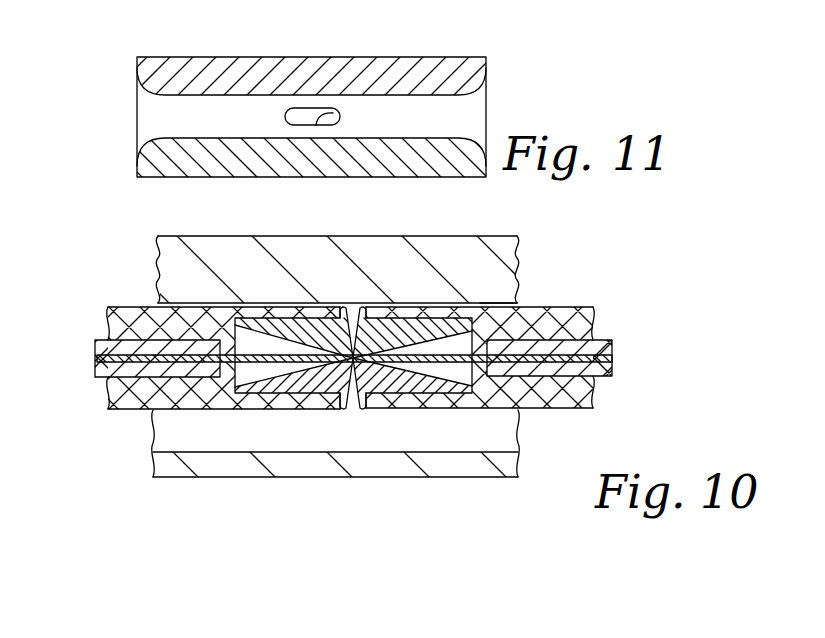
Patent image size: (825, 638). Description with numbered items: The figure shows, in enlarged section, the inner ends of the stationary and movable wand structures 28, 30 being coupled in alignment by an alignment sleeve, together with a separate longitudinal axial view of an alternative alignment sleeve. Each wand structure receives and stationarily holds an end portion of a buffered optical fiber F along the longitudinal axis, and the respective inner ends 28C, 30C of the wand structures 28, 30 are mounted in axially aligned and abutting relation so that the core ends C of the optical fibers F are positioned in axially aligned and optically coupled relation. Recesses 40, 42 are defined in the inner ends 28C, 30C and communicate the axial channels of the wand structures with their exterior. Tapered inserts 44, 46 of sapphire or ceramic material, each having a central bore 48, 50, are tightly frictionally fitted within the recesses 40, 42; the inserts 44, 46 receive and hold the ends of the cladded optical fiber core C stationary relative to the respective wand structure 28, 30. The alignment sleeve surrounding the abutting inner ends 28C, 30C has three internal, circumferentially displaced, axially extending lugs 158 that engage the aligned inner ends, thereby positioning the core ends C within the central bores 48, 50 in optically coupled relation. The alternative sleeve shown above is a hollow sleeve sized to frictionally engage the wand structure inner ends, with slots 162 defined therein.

In FIG. 10, the lugs 158 is at (507, 287).
In FIG. 11, the slots 162 is at (345, 116).
In FIG. 11, the recess 40 is at (291, 0).
In FIG. 10, the recess 40 is at (393, 390).
In FIG. 10, the recess 42 is at (286, 390).
In FIG. 10, the tapered insert 44 is at (415, 328).
In FIG. 10, the tapered insert 46 is at (325, 320).
In FIG. 10, the central bore 48 is at (373, 355).
In FIG. 10, the central bore 50 is at (300, 305).
In FIG. 10, the movable wand structure 30 is at (132, 416).
In FIG. 10, the stationary wand structure 28 is at (573, 416).
In FIG. 10, the inner end 30C is at (257, 395).
In FIG. 10, the inner end 28C is at (437, 395).
In FIG. 10, the optical fibers F is at (95, 365).
In FIG. 10, the cladded optical fiber core C is at (244, 388).